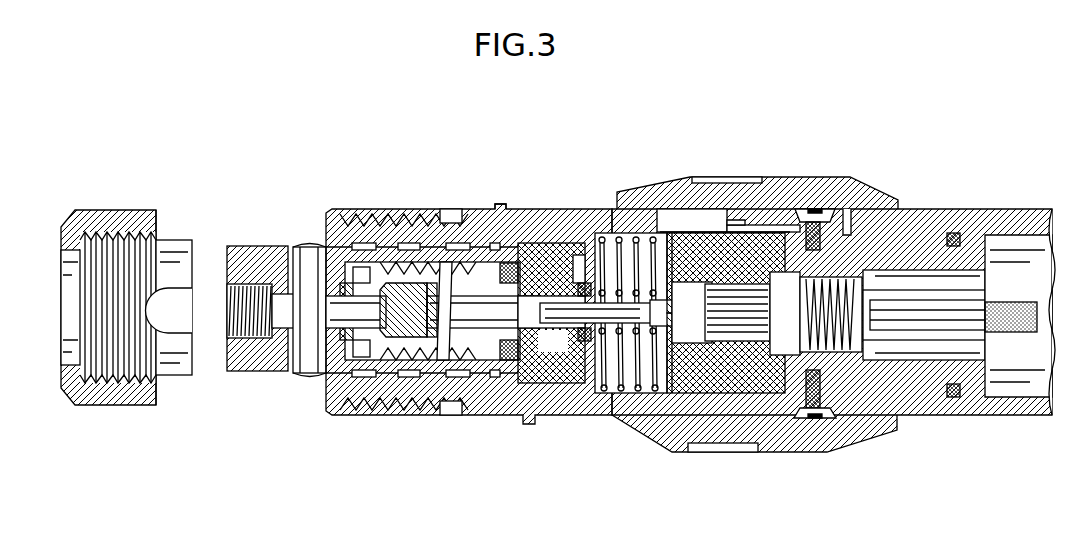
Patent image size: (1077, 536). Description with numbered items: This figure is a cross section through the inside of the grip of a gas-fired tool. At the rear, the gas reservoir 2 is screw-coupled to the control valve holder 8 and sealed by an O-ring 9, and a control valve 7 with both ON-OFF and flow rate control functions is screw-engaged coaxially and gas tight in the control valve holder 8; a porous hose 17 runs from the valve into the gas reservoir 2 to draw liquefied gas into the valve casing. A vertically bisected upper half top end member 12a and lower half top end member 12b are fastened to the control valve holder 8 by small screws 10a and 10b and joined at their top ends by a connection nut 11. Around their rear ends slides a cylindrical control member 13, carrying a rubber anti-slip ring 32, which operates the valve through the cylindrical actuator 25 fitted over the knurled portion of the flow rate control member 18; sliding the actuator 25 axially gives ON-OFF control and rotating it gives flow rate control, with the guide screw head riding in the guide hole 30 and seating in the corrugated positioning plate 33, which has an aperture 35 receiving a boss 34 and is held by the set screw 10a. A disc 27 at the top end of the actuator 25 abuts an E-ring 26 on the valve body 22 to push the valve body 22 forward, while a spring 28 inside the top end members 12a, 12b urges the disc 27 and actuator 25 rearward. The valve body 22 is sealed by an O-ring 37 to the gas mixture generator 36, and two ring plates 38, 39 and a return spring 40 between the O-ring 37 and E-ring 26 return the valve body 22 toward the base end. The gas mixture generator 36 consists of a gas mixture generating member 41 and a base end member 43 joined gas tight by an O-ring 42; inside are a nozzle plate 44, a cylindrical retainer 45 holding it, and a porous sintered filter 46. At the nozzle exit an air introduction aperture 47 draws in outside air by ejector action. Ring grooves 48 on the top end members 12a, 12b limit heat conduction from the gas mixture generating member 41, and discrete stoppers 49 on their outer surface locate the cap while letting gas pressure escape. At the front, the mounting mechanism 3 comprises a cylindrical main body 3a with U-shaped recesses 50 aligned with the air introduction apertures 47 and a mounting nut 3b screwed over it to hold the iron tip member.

The gas reservoir 2 is at (1018, 210).
The mounting mechanism 3 is at (152, 205).
The main body 3a is at (160, 238).
The mounting nut 3b is at (106, 212).
The control valve 7 is at (878, 320).
The control valve holder 8 is at (918, 228).
The O-ring 9 is at (953, 233).
The small screw 10a is at (822, 210).
The small screw 10b is at (826, 420).
The connection nut 11 is at (352, 216).
The upper half top end member 12a is at (548, 209).
The lower half top end member 12b is at (492, 418).
The control member 13 is at (822, 190).
The porous hose 17 is at (1012, 332).
The flow rate control member 18 is at (737, 300).
The valve body 22 is at (536, 300).
The actuator 25 is at (672, 448).
The E-ring 26 is at (706, 394).
The disc 27 is at (670, 270).
The spring 28 is at (601, 240).
The guide hole 30 is at (662, 212).
The anti-slip ring 32 is at (705, 177).
The positioning plate 33 is at (792, 222).
The boss 34 is at (766, 225).
The aperture 35 is at (738, 222).
The gas mixture generator 36 is at (306, 220).
The O-ring 37 is at (585, 330).
The ring plate 38 is at (584, 282).
The ring plate 39 is at (630, 393).
The return spring 40 is at (588, 350).
The gas mixture generating member 41 is at (430, 262).
The O-ring 42 is at (500, 388).
The base end member 43 is at (552, 400).
The nozzle plate 44 is at (343, 283).
The retainer 45 is at (396, 283).
The filter 46 is at (418, 340).
The air introduction aperture 47 is at (296, 373).
The ring grooves 48 is at (455, 243).
The stoppers 49 is at (500, 204).
The U-shaped recesses 50 is at (180, 309).